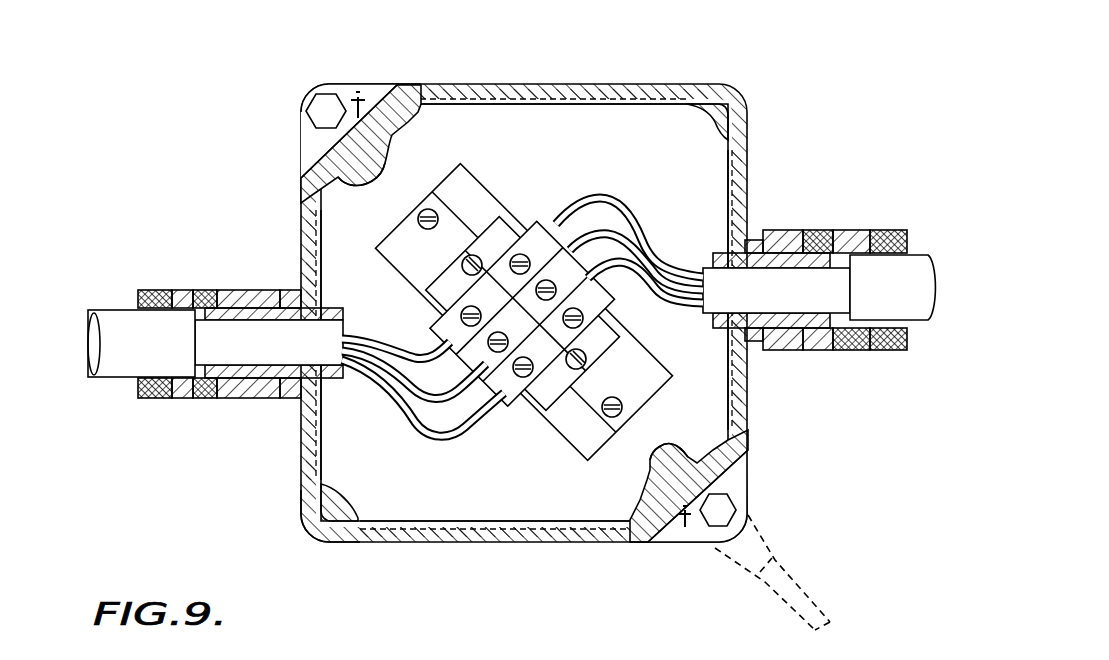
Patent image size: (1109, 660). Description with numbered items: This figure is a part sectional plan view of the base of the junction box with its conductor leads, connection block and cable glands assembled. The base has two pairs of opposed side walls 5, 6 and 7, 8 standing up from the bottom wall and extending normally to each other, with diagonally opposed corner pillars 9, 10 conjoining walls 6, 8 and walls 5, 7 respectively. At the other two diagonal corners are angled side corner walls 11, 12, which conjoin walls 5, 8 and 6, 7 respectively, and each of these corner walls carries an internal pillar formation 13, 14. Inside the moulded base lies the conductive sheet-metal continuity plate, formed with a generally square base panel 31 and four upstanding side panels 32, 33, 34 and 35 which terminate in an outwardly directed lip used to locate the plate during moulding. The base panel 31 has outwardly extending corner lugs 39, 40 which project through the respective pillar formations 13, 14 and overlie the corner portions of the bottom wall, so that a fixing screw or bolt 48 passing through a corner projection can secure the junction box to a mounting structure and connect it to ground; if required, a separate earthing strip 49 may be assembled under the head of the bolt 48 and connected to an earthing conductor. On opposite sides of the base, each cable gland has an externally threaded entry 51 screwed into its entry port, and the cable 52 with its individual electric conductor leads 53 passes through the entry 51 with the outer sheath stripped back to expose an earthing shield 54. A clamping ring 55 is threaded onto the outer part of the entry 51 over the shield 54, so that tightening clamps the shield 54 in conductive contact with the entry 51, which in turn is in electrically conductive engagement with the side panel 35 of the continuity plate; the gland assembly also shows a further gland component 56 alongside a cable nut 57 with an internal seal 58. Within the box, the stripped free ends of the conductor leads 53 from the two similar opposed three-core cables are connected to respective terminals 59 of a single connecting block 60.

The side wall 5 is at (493, 535).
The side wall 6 is at (444, 86).
The side wall 7 is at (313, 463).
The side wall 8 is at (747, 422).
The corner pillar 9 is at (722, 102).
The corner pillar 10 is at (318, 524).
The angled side corner wall 11 is at (667, 546).
The angled side corner wall 12 is at (389, 92).
The internal pillar formation 13 is at (652, 477).
The internal pillar formation 14 is at (385, 166).
The base panel 31 is at (612, 115).
The side panel 32 is at (413, 533).
The side panel 33 is at (566, 97).
The side panel 34 is at (313, 483).
The side panel 35 is at (743, 377).
The corner lug 39 is at (732, 473).
The corner lug 40 is at (308, 143).
The fixing screw or bolt 48 is at (308, 112).
The earthing strip 49 is at (812, 597).
The externally threaded entry 51 is at (293, 290).
The cable 52 is at (150, 334).
The conductor leads 53 is at (578, 200).
The earthing shield 54 is at (193, 290).
The clamping ring 55 is at (245, 400).
The lock nut 56 is at (252, 290).
The cable nut 57 is at (178, 400).
The internal seal 58 is at (155, 400).
The terminals 59 is at (508, 235).
The connecting block 60 is at (461, 166).